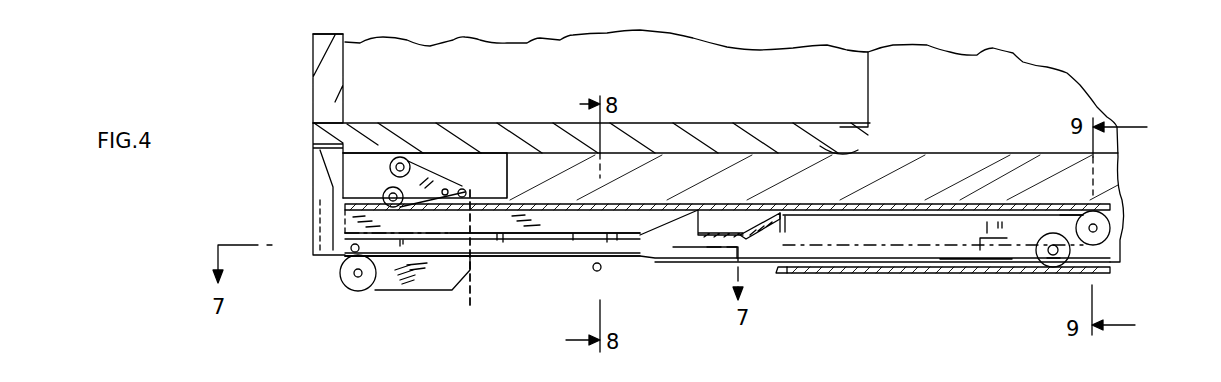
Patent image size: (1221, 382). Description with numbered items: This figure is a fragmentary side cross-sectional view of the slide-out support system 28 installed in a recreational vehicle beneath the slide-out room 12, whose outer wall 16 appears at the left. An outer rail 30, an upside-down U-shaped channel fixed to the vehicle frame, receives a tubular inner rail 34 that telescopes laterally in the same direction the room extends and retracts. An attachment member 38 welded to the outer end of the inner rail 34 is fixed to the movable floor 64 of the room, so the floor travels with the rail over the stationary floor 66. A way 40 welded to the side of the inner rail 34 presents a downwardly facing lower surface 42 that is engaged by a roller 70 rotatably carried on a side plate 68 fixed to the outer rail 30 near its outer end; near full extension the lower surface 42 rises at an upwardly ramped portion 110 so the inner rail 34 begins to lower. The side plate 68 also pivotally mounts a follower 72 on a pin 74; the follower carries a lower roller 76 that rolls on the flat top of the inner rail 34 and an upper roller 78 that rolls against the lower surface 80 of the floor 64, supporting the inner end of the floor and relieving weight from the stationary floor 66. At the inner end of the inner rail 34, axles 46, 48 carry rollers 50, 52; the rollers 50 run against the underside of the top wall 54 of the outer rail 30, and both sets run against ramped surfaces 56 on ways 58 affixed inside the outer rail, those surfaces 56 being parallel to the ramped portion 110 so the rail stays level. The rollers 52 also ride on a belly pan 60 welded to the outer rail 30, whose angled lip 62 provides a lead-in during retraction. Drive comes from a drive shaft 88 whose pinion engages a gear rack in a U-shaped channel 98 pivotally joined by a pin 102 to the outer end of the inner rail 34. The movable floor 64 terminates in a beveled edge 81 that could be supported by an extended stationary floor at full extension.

The slide-out room 12 is at (306, 52).
The outer wall 16 is at (313, 80).
The slide-out support system 28 is at (702, 325).
The outer rail 30 is at (986, 196).
The inner rail 34 is at (700, 247).
The attachment member 38 is at (313, 181).
The way 40 is at (537, 253).
The lower surface 42 is at (562, 256).
The axle 46 is at (1103, 216).
The axle 48 is at (1050, 253).
The roller 50 is at (1108, 232).
The roller 52 is at (1052, 233).
The top wall 54 is at (947, 205).
The ramped surface 56 is at (788, 226).
The way 58 is at (743, 202).
The belly pan 60 is at (903, 282).
The angled lip 62 is at (786, 277).
The floor 64 is at (681, 124).
The stationary floor 66 is at (980, 145).
The side plate 68 is at (428, 290).
The roller 70 is at (358, 292).
The follower 72 is at (438, 153).
The pin 74 is at (464, 187).
The lower roller 76 is at (385, 194).
The upper roller 78 is at (386, 150).
The lower surface 80 is at (462, 162).
The beveled edge 81 is at (858, 150).
The drive shaft 88 is at (601, 270).
The U-shaped channel 98 is at (489, 261).
The pin 102 is at (351, 250).
The upwardly ramped portion 110 is at (665, 243).